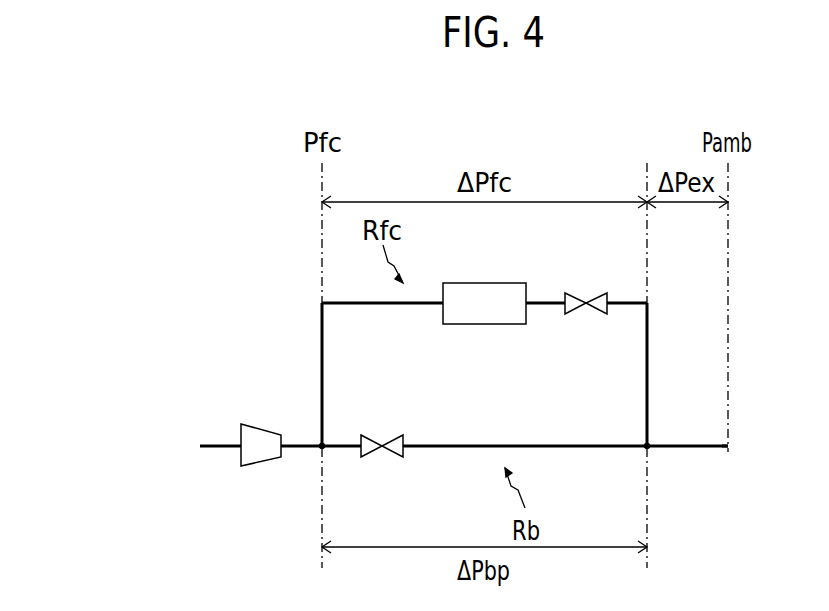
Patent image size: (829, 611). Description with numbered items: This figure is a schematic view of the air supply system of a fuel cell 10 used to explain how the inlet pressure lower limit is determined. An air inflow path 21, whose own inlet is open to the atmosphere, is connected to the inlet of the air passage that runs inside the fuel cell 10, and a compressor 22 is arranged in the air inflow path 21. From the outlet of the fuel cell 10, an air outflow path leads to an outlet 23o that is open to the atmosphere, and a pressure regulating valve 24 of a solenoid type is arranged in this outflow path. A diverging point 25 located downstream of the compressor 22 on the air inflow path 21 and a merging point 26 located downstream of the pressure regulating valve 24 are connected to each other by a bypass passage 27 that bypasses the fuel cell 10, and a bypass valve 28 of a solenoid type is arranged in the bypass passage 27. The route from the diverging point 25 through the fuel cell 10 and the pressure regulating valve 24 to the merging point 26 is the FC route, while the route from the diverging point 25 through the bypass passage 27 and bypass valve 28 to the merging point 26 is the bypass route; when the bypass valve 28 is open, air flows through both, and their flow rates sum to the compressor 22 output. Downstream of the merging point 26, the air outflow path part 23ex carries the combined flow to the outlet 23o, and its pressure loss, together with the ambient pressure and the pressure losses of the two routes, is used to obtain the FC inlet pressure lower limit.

The fuel cell 10 is at (498, 319).
The air inflow path 21 is at (484, 374).
The compressor 22 is at (244, 396).
The pressure regulating valve 24 is at (570, 340).
The diverging point 25 is at (301, 488).
The merging point 26 is at (668, 487).
The bypass passage 27 is at (525, 409).
The bypass valve 28 is at (399, 412).
The air outflow path part 23ex is at (687, 409).
The outlet 23o is at (744, 487).